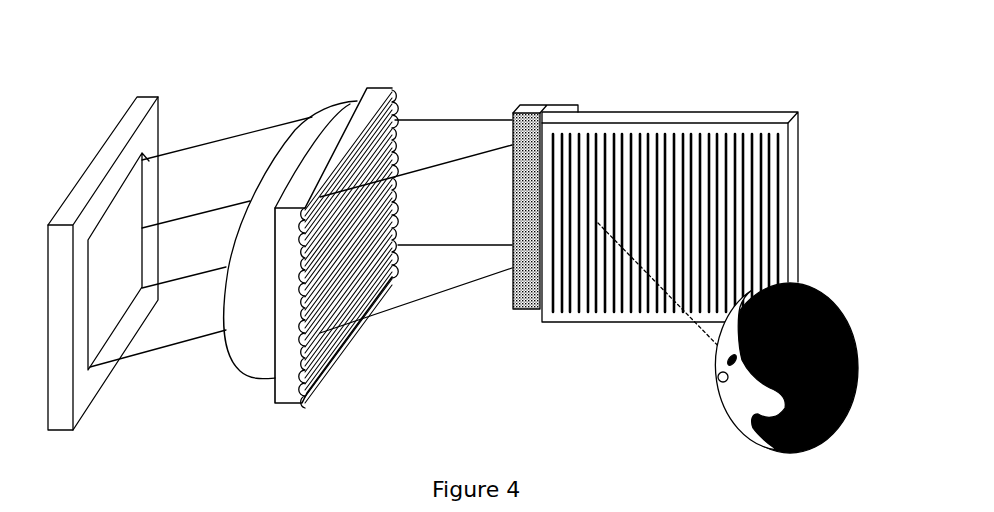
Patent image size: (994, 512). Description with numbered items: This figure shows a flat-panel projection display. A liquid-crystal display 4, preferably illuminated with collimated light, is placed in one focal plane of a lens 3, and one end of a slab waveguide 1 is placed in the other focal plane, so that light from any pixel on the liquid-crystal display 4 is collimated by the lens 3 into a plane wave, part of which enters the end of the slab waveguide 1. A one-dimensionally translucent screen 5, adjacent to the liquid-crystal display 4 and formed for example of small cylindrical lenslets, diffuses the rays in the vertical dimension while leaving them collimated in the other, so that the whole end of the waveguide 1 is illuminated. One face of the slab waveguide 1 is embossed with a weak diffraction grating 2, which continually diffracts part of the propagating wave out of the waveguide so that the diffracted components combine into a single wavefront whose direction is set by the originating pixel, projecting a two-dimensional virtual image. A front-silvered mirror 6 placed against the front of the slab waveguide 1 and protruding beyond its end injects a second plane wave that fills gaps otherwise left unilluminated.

The slab waveguide 1 is at (804, 150).
The weak diffraction grating 2 is at (784, 215).
The lens 3 is at (312, 110).
The liquid-crystal display 4 is at (94, 407).
The one-dimensionally translucent screen 5 is at (350, 353).
The front-silvered mirror 6 is at (553, 99).